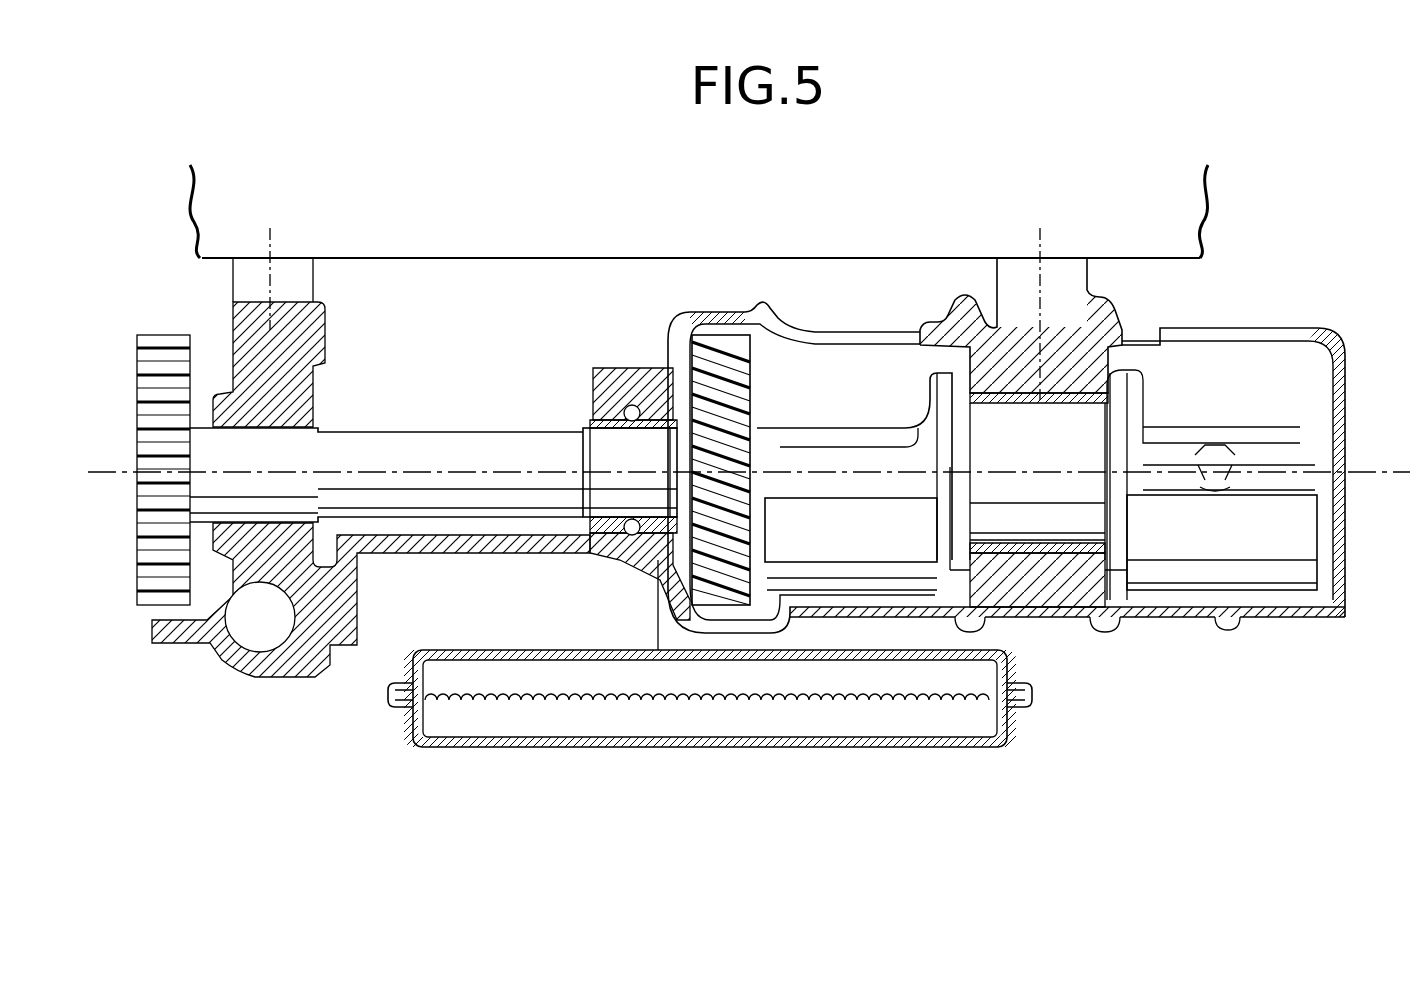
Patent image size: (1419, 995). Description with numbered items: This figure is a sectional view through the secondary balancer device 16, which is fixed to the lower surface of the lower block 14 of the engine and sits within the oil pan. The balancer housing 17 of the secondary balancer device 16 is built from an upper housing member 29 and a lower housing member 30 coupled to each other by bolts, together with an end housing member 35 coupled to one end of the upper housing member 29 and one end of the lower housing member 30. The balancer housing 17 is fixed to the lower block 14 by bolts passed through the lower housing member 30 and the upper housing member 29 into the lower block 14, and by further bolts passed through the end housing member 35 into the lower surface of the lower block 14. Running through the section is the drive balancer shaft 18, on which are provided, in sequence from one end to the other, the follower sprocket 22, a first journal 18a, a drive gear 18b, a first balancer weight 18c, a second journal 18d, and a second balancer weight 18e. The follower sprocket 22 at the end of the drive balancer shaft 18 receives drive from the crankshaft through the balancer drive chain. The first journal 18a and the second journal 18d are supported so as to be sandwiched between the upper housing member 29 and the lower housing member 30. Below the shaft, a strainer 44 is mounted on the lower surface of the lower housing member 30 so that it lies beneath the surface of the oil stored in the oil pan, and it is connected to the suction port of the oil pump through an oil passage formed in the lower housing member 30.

The lower block 14 is at (483, 238).
The secondary balancer device 16 is at (855, 308).
The balancer housing 17 is at (1268, 320).
The drive balancer shaft 18 is at (482, 418).
The first journal 18a is at (622, 505).
The drive gear 18b is at (740, 368).
The first balancer weight 18c is at (890, 560).
The second journal 18d is at (1087, 433).
The second balancer weight 18e is at (1190, 560).
The follower sprocket 22 is at (162, 347).
The upper housing member 29 is at (1103, 330).
The lower housing member 30 is at (1063, 603).
The end housing member 35 is at (303, 395).
The strainer 44 is at (527, 752).